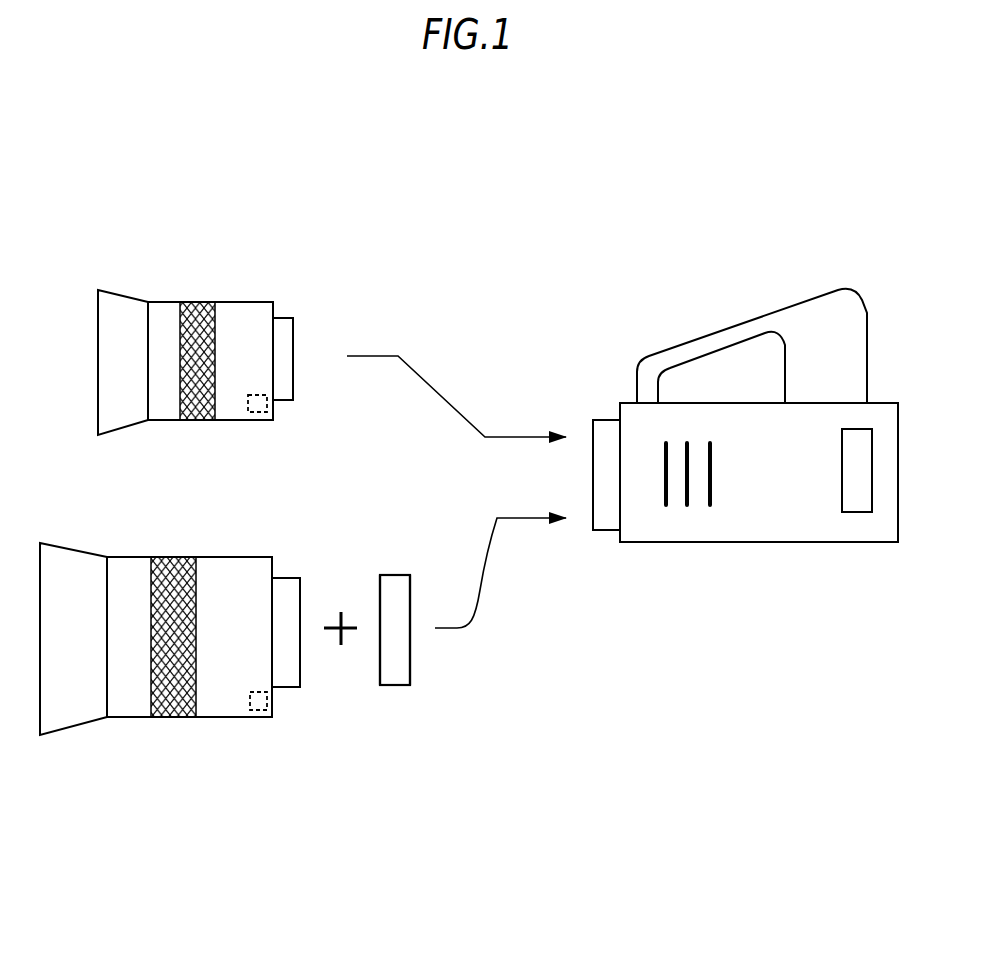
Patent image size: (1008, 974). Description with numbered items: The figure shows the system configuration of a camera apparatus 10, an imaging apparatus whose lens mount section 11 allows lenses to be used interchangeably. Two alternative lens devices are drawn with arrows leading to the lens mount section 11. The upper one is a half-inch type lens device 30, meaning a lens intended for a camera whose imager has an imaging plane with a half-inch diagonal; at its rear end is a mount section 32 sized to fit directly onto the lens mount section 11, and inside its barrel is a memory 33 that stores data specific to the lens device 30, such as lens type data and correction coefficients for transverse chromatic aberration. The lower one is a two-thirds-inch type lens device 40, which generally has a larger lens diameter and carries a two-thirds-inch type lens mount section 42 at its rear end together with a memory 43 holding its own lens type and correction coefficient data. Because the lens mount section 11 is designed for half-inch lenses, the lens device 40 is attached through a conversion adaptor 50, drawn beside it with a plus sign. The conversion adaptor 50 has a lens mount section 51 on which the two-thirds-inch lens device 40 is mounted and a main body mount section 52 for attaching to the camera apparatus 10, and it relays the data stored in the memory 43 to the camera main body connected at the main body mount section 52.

The camera apparatus 10 is at (763, 543).
The lens mount section 11 is at (612, 537).
The ½-inch type lens device 30 is at (166, 293).
The mount section 32 is at (296, 324).
The memory 33 is at (262, 413).
The ⅔-inch type lens device 40 is at (130, 727).
The ⅔-inch type lens mount section 42 is at (288, 690).
The memory 43 is at (260, 713).
The conversion adaptor 50 is at (400, 704).
The lens mount section 51 is at (380, 676).
The main body mount section 52 is at (410, 655).